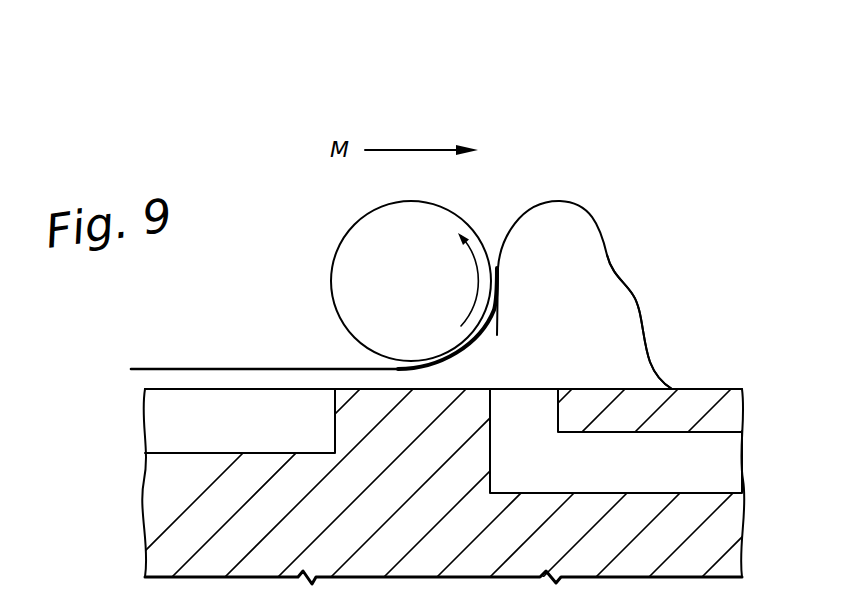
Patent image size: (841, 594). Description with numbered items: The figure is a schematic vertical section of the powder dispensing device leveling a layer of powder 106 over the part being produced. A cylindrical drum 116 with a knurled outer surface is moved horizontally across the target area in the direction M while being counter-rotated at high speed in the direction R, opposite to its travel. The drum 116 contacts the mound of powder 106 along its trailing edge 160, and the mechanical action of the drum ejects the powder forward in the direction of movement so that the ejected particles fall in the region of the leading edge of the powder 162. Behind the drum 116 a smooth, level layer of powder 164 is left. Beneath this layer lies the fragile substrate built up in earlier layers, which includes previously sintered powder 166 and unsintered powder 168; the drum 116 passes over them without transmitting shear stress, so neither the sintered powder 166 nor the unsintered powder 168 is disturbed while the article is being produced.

The powder 106 is at (564, 197).
The cylindrical drum 116 is at (363, 218).
The trailing edge 160 is at (487, 332).
The leading edge of the powder 162 is at (632, 289).
The smooth level layer of powder 164 is at (229, 368).
The previously sintered powder 166 is at (180, 516).
The unsintered powder 168 is at (278, 430).